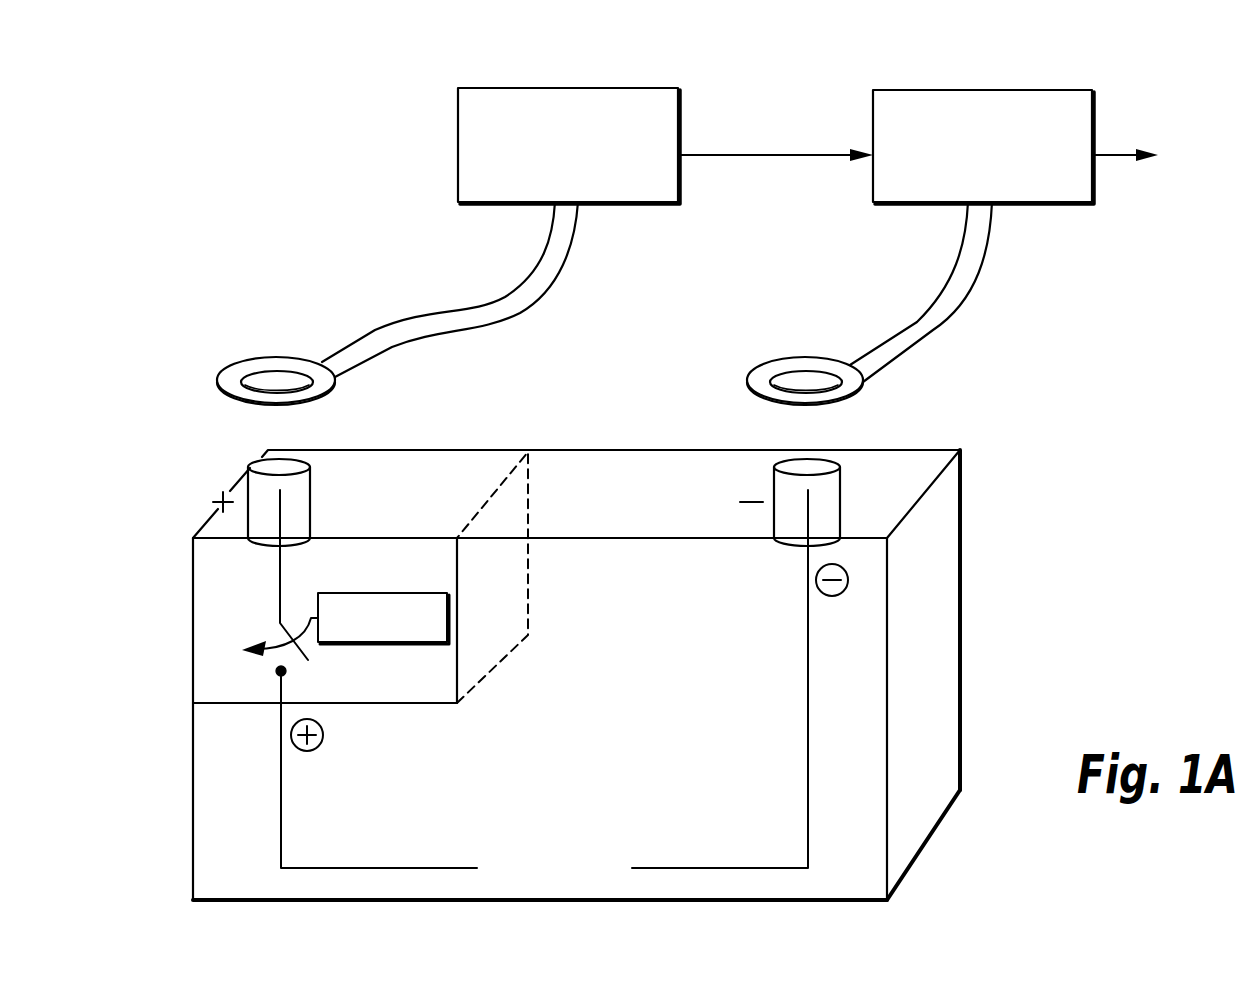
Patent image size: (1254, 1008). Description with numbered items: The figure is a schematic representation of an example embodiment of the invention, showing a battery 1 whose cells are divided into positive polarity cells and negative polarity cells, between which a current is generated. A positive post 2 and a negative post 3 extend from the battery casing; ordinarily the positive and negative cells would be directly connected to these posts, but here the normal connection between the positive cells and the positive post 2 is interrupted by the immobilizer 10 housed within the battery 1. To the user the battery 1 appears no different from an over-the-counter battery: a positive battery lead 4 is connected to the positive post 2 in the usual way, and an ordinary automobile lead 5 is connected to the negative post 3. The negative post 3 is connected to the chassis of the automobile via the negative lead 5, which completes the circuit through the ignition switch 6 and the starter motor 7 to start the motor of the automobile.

The battery 1 is at (576, 675).
The positive post 2 is at (225, 453).
The negative post 3 is at (861, 453).
The positive battery lead 4 is at (247, 360).
The negative lead 5 is at (776, 358).
The ignition switch 6 is at (532, 88).
The starter motor 7 is at (947, 90).
The immobilizer 10 is at (193, 627).